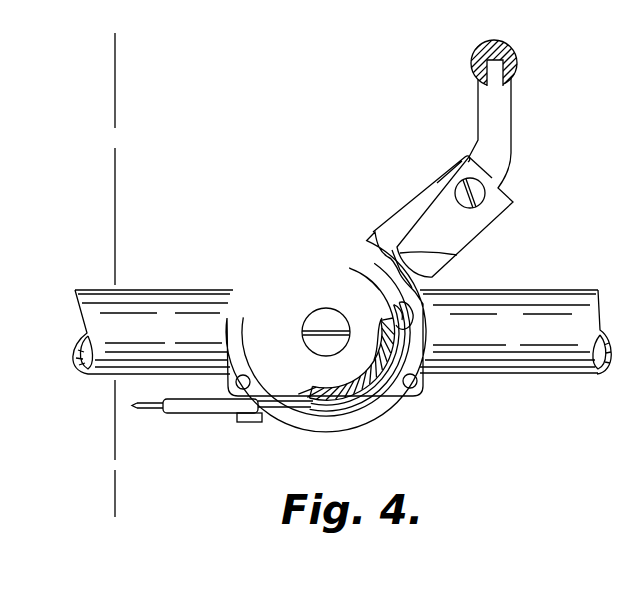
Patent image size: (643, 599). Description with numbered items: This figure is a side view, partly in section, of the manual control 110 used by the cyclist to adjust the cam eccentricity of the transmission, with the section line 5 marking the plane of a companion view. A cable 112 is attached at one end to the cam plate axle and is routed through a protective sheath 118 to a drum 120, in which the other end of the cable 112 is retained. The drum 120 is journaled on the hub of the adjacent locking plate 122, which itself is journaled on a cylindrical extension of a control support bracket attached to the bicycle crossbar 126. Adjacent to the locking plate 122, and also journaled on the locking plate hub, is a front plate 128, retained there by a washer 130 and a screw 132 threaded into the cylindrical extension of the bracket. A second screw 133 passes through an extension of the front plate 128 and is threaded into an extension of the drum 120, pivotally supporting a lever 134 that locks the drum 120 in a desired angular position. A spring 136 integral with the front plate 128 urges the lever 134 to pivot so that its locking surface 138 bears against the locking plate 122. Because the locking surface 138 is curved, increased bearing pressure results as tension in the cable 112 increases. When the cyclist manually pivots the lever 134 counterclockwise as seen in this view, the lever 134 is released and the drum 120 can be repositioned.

The section line 5- 5 is at (154, 517).
The manual control 110 is at (324, 152).
The cable 112 is at (287, 409).
The protective sheath 118 is at (205, 416).
The drum 120 is at (368, 404).
The locking plate 122 is at (242, 272).
The bicycle crossbar 126 is at (548, 375).
The front plate 128 is at (275, 264).
The washer 130 is at (302, 266).
The screw 132 is at (322, 309).
The second screw 133 is at (484, 189).
The lever 134 is at (510, 123).
The spring 136 is at (456, 160).
The locking surface 138 is at (457, 255).